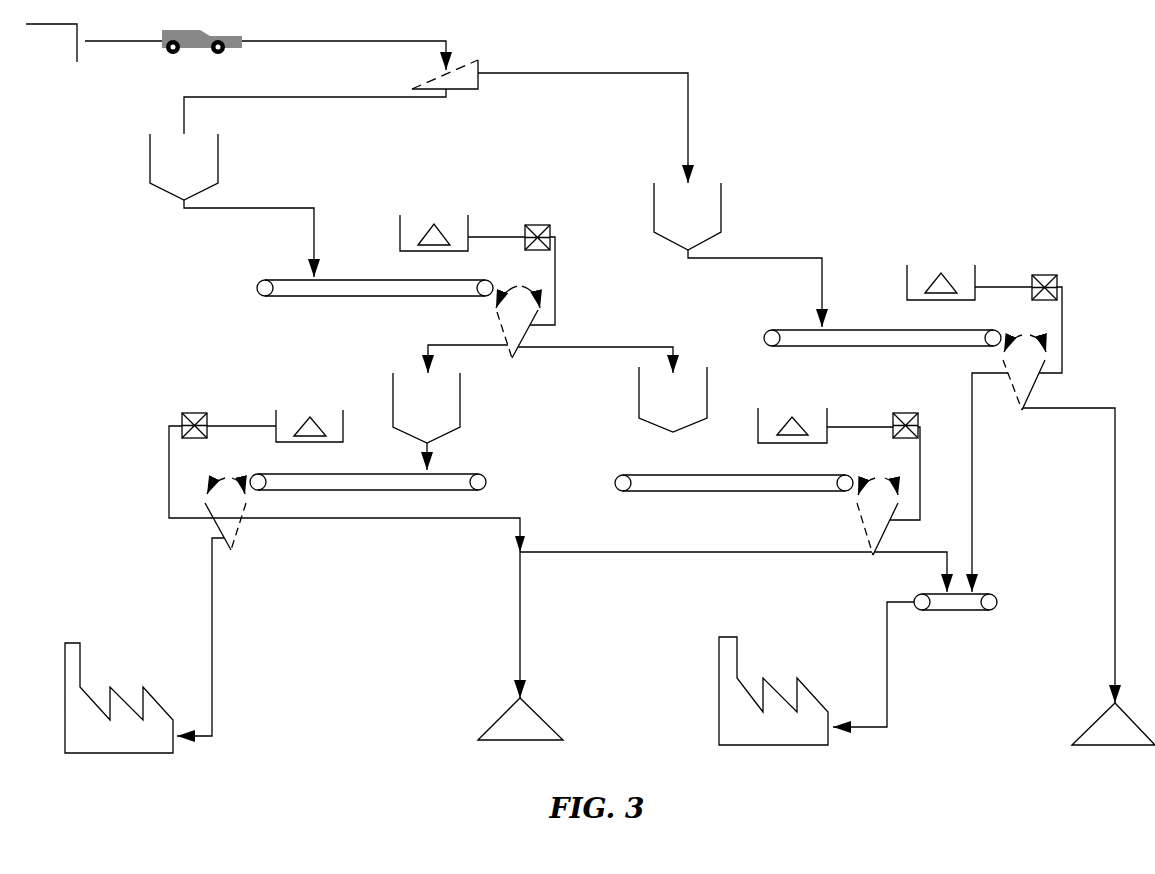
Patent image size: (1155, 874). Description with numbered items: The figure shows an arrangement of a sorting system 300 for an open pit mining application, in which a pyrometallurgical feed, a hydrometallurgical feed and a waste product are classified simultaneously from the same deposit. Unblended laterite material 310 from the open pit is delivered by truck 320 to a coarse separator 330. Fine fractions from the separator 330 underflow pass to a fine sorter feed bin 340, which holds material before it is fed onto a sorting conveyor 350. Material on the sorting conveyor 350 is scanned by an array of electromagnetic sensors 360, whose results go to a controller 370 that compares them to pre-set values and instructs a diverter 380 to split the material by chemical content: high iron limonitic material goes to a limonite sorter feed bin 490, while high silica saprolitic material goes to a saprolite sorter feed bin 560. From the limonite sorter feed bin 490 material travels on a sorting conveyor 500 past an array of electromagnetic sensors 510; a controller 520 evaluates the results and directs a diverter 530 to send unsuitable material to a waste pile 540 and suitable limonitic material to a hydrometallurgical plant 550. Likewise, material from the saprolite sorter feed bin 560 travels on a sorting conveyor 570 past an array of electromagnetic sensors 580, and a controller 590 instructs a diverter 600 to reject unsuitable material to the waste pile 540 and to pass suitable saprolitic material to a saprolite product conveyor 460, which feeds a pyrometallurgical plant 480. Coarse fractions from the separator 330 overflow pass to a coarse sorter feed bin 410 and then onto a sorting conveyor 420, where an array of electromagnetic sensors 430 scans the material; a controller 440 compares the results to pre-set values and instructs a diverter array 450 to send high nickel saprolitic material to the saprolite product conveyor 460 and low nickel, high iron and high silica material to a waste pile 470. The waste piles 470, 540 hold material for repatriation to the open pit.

The material processing system 300 is at (1040, 83).
The unblended laterite material 310 is at (236, 54).
The truck 320 is at (315, 106).
The coarse separator 330 is at (550, 121).
The fine sorter feed bin 340 is at (232, 205).
The sorting conveyor 350 is at (375, 303).
The array of electromagnetic sensors 360 is at (462, 247).
The controller 370 is at (539, 266).
The diverter 380 is at (550, 334).
The coarse sorter feed bin 410 is at (738, 255).
The sorting conveyor 420 is at (882, 349).
The array of electromagnetic sensors 430 is at (969, 292).
The controller 440 is at (1046, 315).
The diverter array 450 is at (1043, 519).
The saprolite product conveyor 460 is at (915, 660).
The waste pile 470 is at (1113, 735).
The pyrometallurgical plant 480 is at (773, 702).
The limonite sorter feed bin 490 is at (426, 421).
The sorting conveyor 500 is at (368, 492).
The array of electromagnetic sensors 510 is at (309, 436).
The controller 520 is at (344, 547).
The diverter 530 is at (211, 607).
The waste pile 540 is at (520, 731).
The hydrometallurgical plant 550 is at (119, 709).
The saprolite sorter feed bin 560 is at (673, 411).
The sorting conveyor 570 is at (734, 492).
The array of electromagnetic sensors 580 is at (825, 435).
The controller 590 is at (905, 458).
The diverter 600 is at (731, 535).